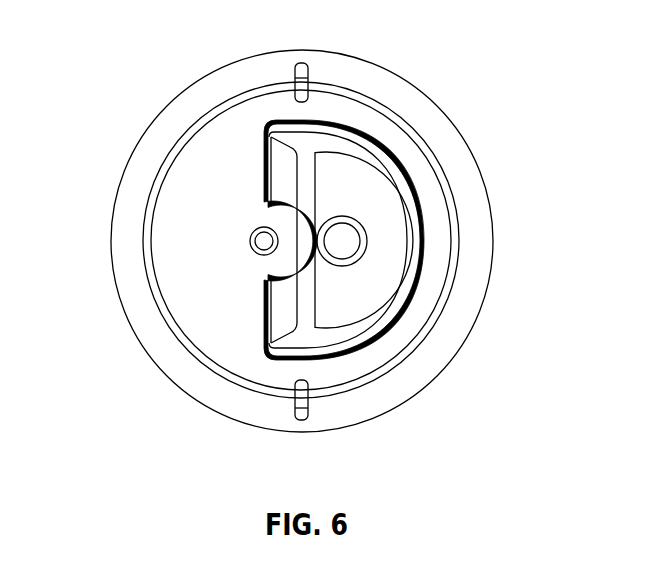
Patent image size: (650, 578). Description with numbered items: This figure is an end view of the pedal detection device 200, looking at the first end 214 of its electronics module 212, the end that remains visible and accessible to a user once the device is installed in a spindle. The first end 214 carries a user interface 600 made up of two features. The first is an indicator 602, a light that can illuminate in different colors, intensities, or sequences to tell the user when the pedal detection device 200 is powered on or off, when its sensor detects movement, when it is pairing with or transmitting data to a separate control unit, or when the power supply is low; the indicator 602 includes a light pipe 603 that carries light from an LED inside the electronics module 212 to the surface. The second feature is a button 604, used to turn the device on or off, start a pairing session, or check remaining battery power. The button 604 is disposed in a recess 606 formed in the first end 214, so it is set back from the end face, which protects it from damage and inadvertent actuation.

The pedal detection device 200 is at (165, 43).
The electronics module 212 is at (185, 199).
The first end 214 is at (190, 237).
The user interface 600 is at (251, 164).
The recess 606 is at (380, 158).
The button 604 is at (343, 242).
The indicator 602 is at (247, 249).
The light pipe 603 is at (263, 243).